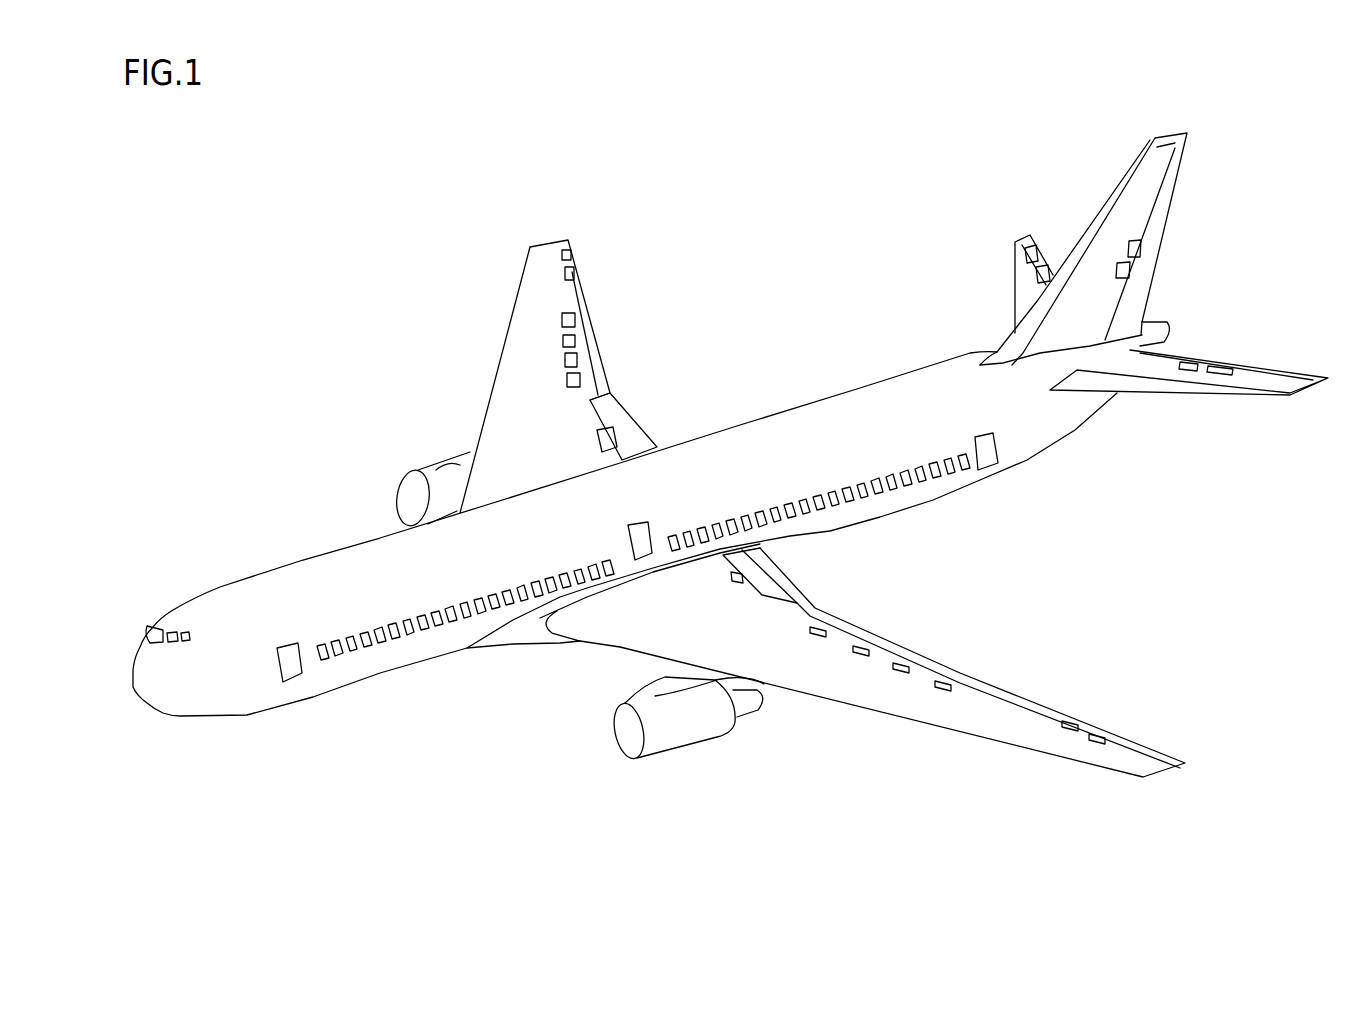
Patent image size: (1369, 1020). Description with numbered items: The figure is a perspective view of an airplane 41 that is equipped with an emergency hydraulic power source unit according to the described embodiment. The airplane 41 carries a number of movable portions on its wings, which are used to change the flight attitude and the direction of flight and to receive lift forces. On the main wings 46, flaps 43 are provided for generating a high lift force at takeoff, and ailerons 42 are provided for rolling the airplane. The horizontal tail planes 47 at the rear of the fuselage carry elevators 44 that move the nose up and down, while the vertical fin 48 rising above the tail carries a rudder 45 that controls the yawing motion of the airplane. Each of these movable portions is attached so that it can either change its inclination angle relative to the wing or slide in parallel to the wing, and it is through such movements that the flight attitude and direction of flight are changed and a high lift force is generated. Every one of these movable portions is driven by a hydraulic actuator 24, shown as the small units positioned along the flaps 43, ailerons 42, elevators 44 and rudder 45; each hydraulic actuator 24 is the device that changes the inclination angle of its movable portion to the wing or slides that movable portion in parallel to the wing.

The hydraulic actuator 24 is at (565, 273).
The airplane 41 is at (825, 229).
The ailerons 42 is at (574, 254).
The flaps 43 is at (592, 337).
The elevators 44 is at (1045, 260).
The rudder 45 is at (1157, 227).
The main wings 46 is at (517, 378).
The horizontal tail planes 47 is at (1023, 294).
The vertical fin 48 is at (1147, 192).